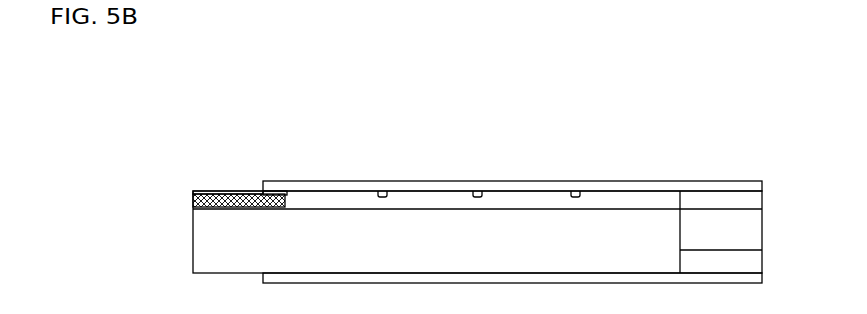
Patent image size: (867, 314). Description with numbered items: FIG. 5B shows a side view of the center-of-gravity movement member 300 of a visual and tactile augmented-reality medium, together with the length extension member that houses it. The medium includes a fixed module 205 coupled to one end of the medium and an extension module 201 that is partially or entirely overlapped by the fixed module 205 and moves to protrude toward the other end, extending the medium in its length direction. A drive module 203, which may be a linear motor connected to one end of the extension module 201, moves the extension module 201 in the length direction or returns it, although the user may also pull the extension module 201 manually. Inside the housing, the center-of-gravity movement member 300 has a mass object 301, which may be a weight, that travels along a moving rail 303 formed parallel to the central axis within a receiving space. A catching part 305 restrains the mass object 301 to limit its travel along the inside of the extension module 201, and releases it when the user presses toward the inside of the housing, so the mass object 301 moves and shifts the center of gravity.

The extension module 201 is at (413, 228).
The fixed module 205 is at (523, 186).
The drive module 203 is at (737, 262).
The center-of-gravity movement member 300 is at (267, 102).
The mass object 301 is at (208, 192).
The moving rail 303 is at (192, 207).
The catching part 305 is at (282, 193).